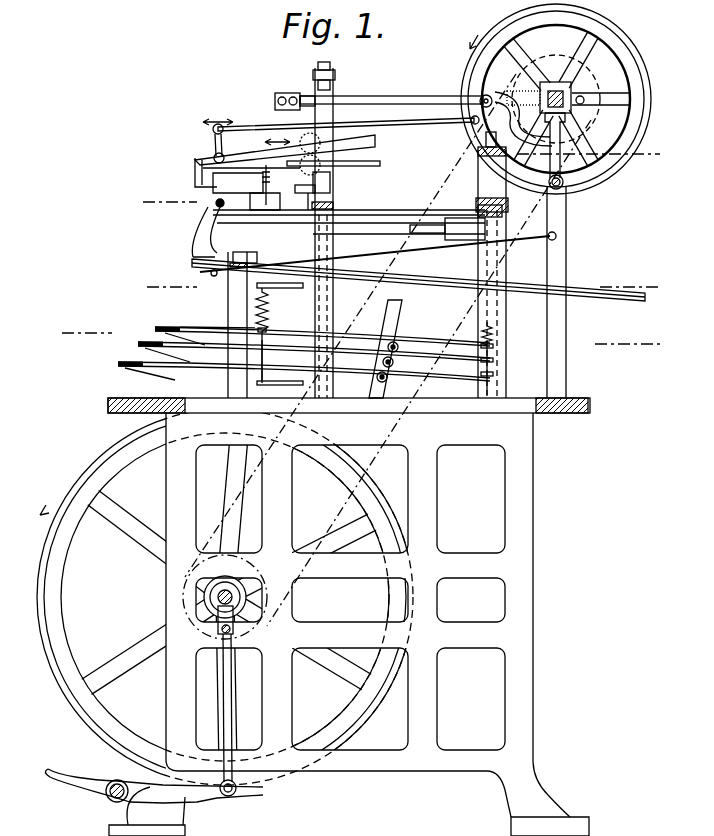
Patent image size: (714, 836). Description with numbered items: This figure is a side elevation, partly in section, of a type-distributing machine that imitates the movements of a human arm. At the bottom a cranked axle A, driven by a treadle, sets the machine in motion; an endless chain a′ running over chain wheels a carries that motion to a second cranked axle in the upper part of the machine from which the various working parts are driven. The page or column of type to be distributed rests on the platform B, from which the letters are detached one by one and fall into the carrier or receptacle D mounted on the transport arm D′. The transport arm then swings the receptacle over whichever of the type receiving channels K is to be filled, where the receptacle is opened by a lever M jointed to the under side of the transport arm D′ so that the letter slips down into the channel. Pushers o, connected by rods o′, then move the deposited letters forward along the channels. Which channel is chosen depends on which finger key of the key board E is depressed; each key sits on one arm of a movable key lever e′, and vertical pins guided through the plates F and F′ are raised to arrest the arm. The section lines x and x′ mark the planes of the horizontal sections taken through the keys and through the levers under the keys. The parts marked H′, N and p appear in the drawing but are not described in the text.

The cranked axle A is at (232, 598).
The chain wheels a is at (600, 84).
The endless chain a′ is at (403, 422).
The platform B is at (285, 150).
The carrier D is at (240, 207).
The transport arm D′ is at (262, 207).
The key board E is at (100, 338).
The key lever e′ is at (205, 327).
The plate F is at (282, 294).
The plate F′ is at (268, 372).
The shaft H′ is at (342, 176).
The type receiving channels K is at (418, 280).
The lever M is at (415, 235).
The standard N is at (476, 168).
The pushers o is at (213, 275).
The rods o′ is at (370, 258).
The block p is at (479, 147).
The section line x is at (399, 286).
The section line x′ is at (356, 336).